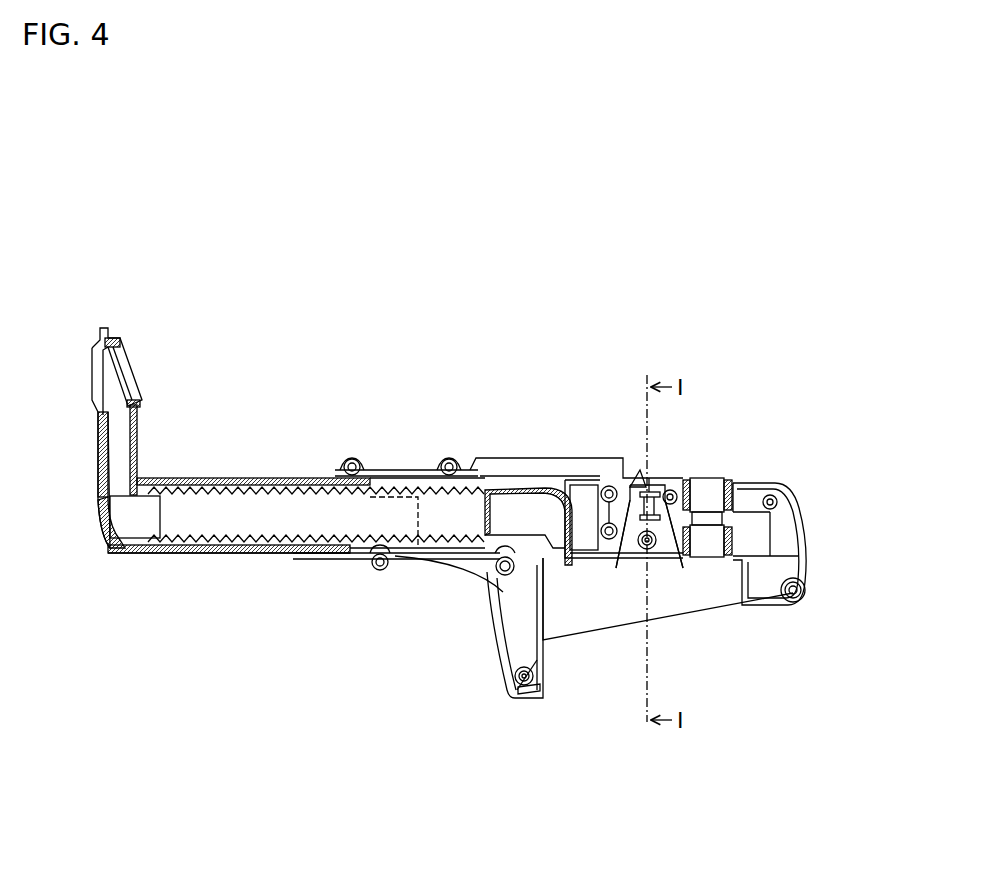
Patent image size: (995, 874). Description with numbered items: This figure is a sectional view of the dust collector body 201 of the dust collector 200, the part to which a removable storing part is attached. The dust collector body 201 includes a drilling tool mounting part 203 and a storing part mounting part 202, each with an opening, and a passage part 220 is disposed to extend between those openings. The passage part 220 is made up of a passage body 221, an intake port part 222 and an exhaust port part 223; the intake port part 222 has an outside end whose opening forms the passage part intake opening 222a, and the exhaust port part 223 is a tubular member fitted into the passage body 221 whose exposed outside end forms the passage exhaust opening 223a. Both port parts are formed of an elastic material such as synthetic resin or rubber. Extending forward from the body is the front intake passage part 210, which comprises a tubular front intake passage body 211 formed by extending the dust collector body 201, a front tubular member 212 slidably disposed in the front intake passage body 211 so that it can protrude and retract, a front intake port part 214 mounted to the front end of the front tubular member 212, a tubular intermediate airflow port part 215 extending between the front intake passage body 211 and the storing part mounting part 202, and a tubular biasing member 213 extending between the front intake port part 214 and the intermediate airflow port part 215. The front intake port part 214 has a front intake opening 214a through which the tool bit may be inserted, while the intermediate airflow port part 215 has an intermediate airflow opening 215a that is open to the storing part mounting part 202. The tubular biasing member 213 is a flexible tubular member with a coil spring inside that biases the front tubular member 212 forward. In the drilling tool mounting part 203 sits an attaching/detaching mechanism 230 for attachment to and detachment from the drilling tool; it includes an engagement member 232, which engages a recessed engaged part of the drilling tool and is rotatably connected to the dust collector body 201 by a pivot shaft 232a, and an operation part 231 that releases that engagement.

The dust collector 200 is at (489, 380).
The dust collector body 201 is at (408, 466).
The storing part mounting part 202 is at (637, 572).
The drilling tool mounting part 203 is at (669, 476).
The front intake passage part 210 is at (210, 598).
The front intake passage body 211 is at (315, 555).
The front tubular member 212 is at (170, 553).
The tubular biasing member 213 is at (275, 485).
The front intake port part 214 is at (137, 427).
The front intake opening 214a is at (97, 378).
The intermediate airflow port part 215 is at (495, 546).
The intermediate airflow opening 215a is at (547, 556).
The passage part 220 is at (785, 606).
The passage body 221 is at (737, 513).
The intake port part 222 is at (731, 528).
The passage part intake opening 222a is at (710, 558).
The exhaust port part 223 is at (733, 485).
The passage exhaust opening 223a is at (729, 482).
The attaching/detaching mechanism 230 is at (635, 468).
The operation part 231 is at (675, 548).
The engagement member 232 is at (623, 567).
The pivot shaft 232a is at (685, 548).